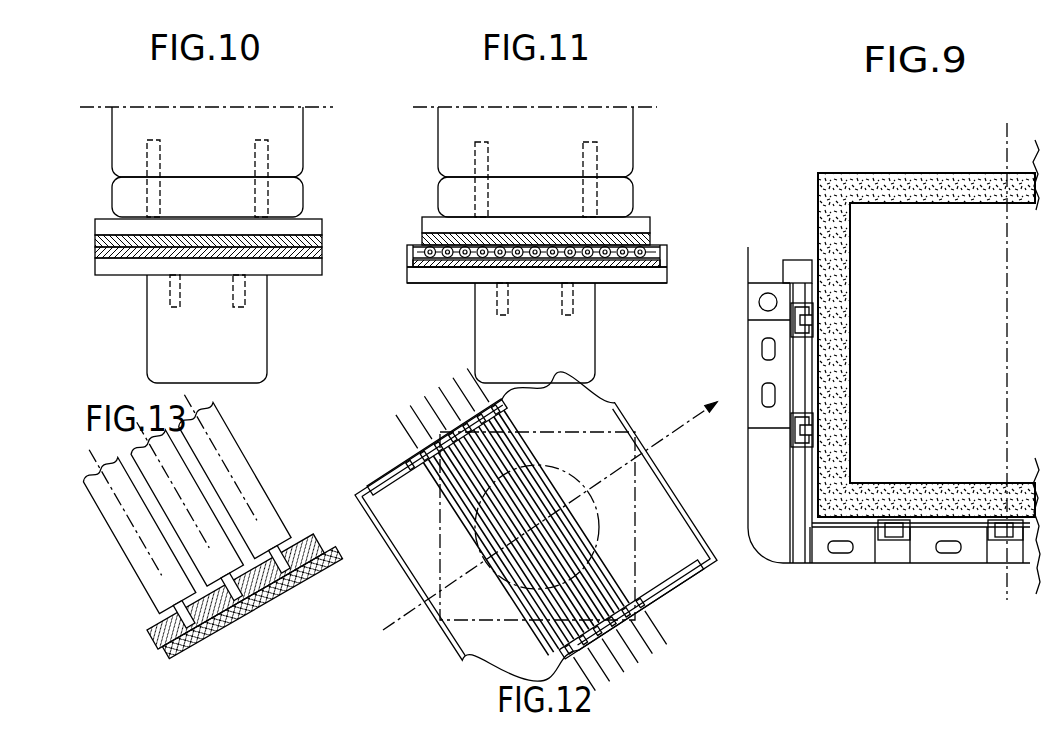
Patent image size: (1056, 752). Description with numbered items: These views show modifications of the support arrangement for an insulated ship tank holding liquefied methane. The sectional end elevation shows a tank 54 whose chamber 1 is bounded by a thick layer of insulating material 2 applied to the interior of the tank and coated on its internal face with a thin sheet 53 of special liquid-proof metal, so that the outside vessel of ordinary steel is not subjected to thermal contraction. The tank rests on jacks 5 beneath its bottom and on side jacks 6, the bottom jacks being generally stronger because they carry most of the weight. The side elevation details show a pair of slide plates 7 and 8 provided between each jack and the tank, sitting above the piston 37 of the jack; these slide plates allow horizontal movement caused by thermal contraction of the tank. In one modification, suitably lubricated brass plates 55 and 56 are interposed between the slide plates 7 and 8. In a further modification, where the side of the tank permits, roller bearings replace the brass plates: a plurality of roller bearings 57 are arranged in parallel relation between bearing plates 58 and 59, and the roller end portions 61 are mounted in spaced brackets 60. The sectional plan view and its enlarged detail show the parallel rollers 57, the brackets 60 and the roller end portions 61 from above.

In FIG. 9, the chamber 1 is at (978, 317).
In FIG. 9, the insulating material 2 is at (850, 187).
In FIG. 9, the jack 5 is at (895, 527).
In FIG. 9, the side jack 6 is at (797, 322).
In FIG. 10, the slide plate 7 is at (307, 227).
In FIG. 11, the slide plate 7 is at (465, 227).
In FIG. 10, the slide plate 8 is at (303, 267).
In FIG. 11, the slide plate 8 is at (618, 273).
In FIG. 10, the piston 37 is at (193, 335).
In FIG. 11, the piston 37 is at (507, 345).
In FIG. 9, the thin sheet 53 is at (853, 265).
In FIG. 9, the tank 54 is at (818, 212).
In FIG. 10, the brass plate 55 is at (107, 255).
In FIG. 10, the brass plate 56 is at (112, 242).
In FIG. 11, the roller bearing 57 is at (647, 240).
In FIG. 12, the roller bearing 57 is at (483, 422).
In FIG. 13, the roller bearing 57 is at (240, 508).
In FIG. 11, the bearing plate 58 is at (438, 242).
In FIG. 11, the bearing plate 59 is at (433, 256).
In FIG. 11, the bracket 60 is at (415, 250).
In FIG. 12, the bracket 60 is at (382, 480).
In FIG. 13, the bracket 60 is at (298, 543).
In FIG. 13, the roller end portion 61 is at (247, 603).